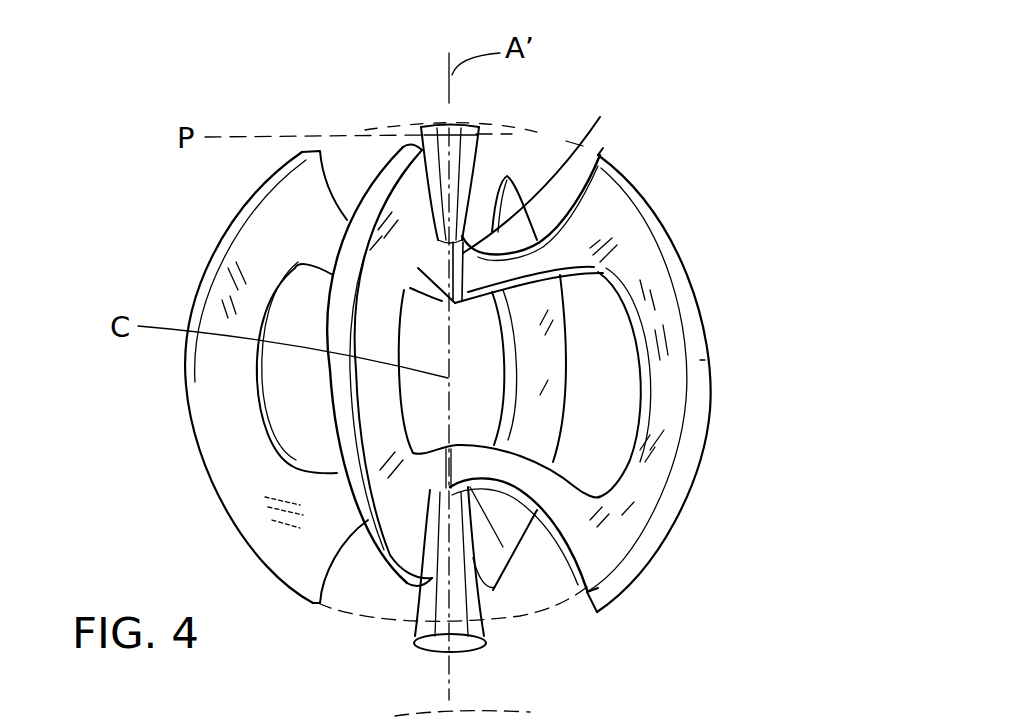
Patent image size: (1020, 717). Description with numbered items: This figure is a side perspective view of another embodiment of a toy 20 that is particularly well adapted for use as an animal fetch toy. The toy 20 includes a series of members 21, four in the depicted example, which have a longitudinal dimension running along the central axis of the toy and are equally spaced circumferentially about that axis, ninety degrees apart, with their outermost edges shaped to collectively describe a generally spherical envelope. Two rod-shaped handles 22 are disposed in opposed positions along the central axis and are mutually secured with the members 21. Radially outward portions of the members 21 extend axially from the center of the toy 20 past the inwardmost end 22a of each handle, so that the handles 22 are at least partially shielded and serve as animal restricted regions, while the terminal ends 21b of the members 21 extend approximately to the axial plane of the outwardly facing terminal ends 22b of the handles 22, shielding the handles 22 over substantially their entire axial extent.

The toy 20 is at (710, 226).
The member 21 is at (380, 188).
The terminal end 21b is at (605, 150).
The rod-shaped handle 22 is at (430, 622).
The inwardmost end of the handle 22a is at (613, 617).
The outwardly facing terminal end of the handle 22b is at (436, 122).